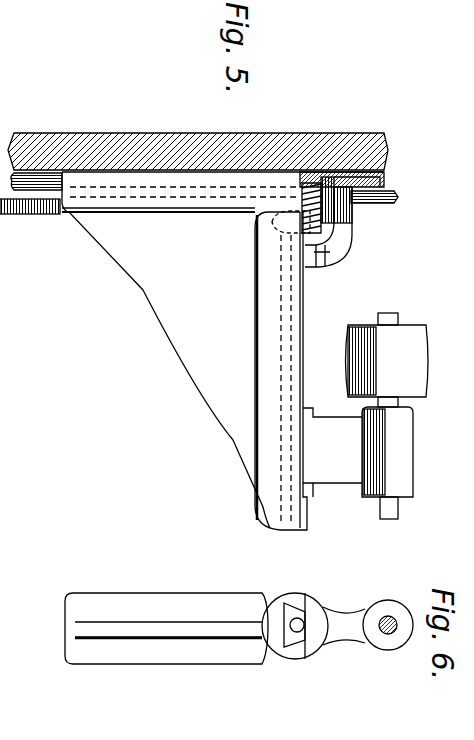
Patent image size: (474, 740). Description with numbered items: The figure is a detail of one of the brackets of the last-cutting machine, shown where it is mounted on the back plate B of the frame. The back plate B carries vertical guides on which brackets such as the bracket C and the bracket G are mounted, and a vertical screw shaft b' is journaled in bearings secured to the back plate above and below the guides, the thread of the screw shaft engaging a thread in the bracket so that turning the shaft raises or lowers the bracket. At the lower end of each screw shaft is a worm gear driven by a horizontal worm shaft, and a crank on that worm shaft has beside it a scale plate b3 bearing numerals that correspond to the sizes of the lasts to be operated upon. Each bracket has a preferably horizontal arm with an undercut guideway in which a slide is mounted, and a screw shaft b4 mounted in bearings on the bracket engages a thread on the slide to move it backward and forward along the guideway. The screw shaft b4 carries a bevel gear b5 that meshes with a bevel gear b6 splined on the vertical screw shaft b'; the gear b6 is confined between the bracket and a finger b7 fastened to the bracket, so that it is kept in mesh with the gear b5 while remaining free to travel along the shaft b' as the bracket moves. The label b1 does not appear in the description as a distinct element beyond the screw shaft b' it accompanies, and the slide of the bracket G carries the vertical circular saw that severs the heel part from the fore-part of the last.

In FIG. 5, the back plate B is at (184, 140).
In FIG. 5, the bracket C is at (231, 203).
In FIG. 5, the bracket G is at (308, 497).
In FIG. 6, the bracket G is at (187, 600).
In FIG. 5, the vertical screw shaft b' is at (30, 216).
In FIG. 5, the screw b1 is at (395, 197).
In FIG. 5, the scale plate b3 is at (33, 172).
In FIG. 5, the screw shaft b4 is at (303, 317).
In FIG. 6, the screw shaft b4 is at (299, 630).
In FIG. 5, the bevel gear b5 is at (311, 231).
In FIG. 5, the bevel gear b6 is at (335, 222).
In FIG. 5, the finger b7 is at (348, 214).